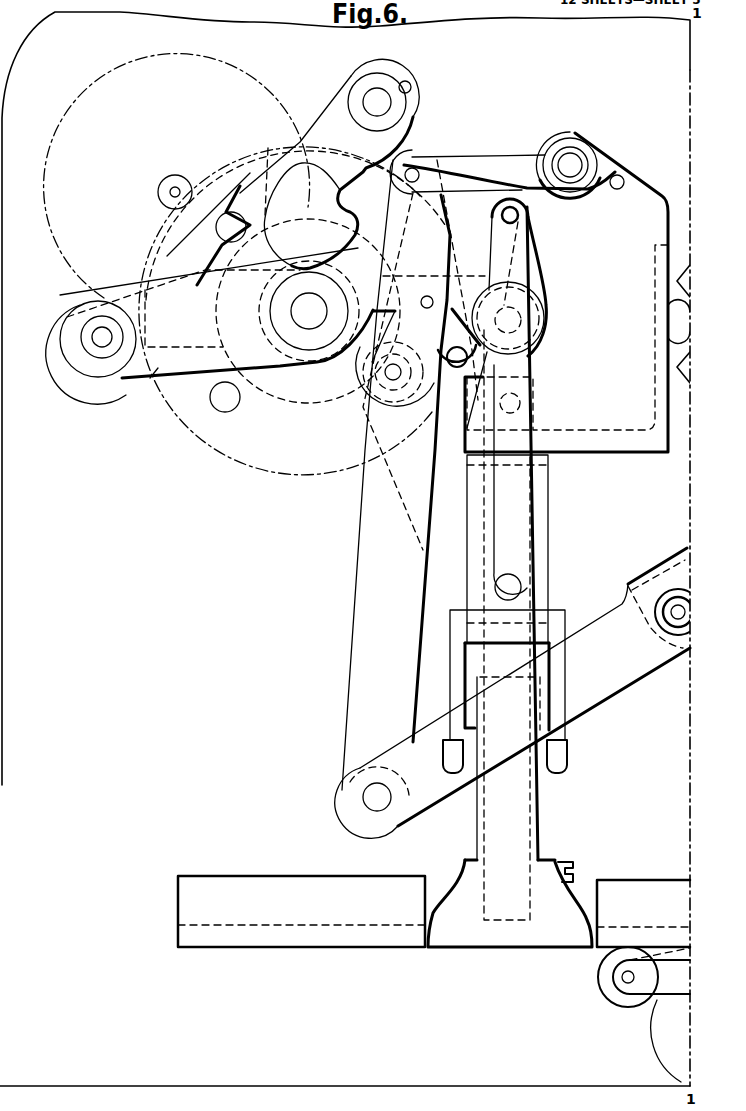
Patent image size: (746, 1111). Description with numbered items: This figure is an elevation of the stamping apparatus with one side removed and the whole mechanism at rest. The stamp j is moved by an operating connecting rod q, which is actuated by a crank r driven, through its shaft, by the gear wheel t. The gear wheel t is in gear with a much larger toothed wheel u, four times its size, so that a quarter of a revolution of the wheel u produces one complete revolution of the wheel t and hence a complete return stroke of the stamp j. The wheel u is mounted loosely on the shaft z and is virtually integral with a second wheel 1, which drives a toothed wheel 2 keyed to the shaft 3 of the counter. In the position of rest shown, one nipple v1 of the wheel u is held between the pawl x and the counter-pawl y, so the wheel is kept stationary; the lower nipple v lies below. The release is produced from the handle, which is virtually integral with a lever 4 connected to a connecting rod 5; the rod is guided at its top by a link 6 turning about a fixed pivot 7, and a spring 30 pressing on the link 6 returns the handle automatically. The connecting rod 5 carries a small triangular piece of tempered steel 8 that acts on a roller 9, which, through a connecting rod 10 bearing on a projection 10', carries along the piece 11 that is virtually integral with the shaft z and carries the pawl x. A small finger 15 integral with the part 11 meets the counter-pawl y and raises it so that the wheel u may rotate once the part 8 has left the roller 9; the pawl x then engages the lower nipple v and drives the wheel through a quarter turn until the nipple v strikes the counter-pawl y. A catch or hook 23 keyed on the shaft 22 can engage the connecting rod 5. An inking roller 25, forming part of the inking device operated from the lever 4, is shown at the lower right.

The second wheel 1 is at (285, 345).
The toothed wheel 2 is at (44, 195).
The shaft 3 is at (170, 186).
The lever 4 is at (518, 693).
The connecting rod 5 is at (457, 521).
The link 6 is at (467, 168).
The fixed pivot 7 is at (566, 292).
The piece of tempered steel 8 is at (431, 468).
The roller 9 is at (362, 372).
The connecting rod 10 is at (388, 371).
The projection 10' is at (453, 280).
The piece 11 is at (371, 205).
The finger 15 is at (458, 372).
The shaft 22 is at (383, 95).
The catch or hook 23 is at (326, 172).
The inking roller 25 is at (601, 981).
The spring 30 is at (514, 177).
The pawl x is at (182, 248).
The counter-pawl y is at (270, 170).
The shaft z is at (308, 311).
The toothed wheel u is at (277, 471).
The lower nipple v is at (225, 397).
The nipple v1 is at (223, 235).
The crank r is at (537, 262).
The gear wheel t is at (543, 323).
The connecting rod q is at (505, 625).
The stamp j is at (434, 903).